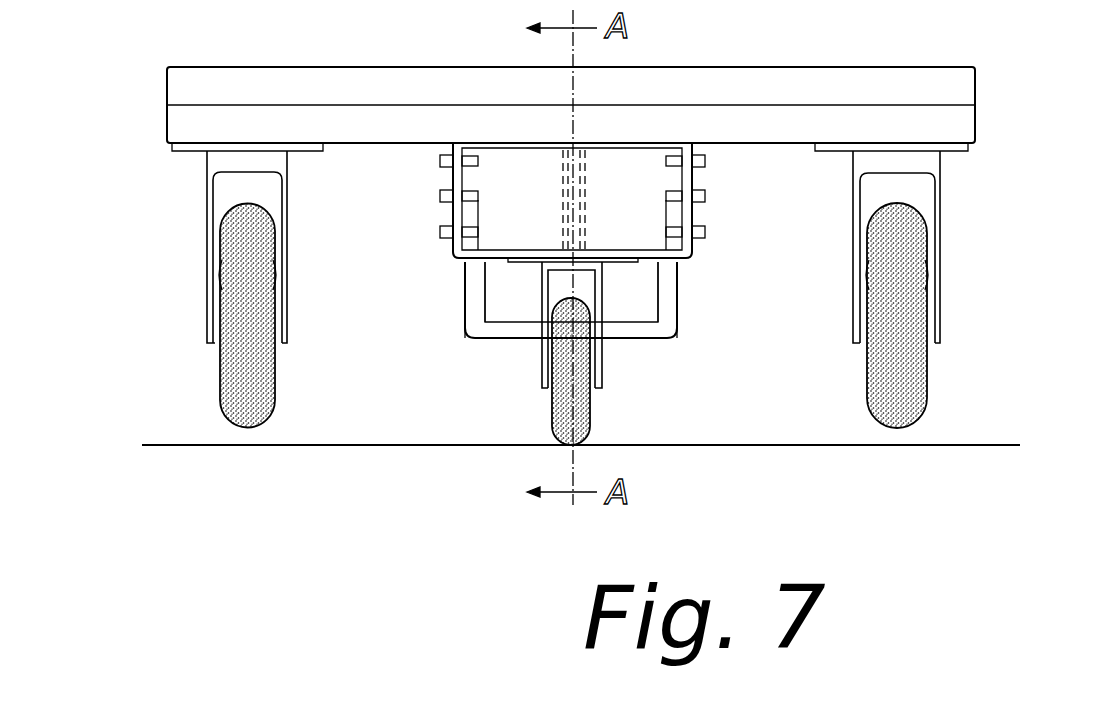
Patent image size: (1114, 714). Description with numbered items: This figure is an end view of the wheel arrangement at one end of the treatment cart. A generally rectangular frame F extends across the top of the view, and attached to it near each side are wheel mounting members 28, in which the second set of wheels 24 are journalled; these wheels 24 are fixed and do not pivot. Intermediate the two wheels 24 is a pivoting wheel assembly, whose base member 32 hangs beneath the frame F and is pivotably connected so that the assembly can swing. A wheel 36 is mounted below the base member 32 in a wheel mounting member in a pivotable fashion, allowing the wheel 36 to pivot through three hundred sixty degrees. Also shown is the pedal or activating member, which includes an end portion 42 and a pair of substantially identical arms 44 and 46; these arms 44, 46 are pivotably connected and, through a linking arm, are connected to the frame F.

The frame F is at (190, 122).
The wheel mounting members 28 is at (207, 195).
The second set of wheels 24 is at (247, 362).
The base member 32 is at (645, 257).
The end portion 42 is at (510, 330).
The arm 44 is at (482, 288).
The arm 46 is at (665, 302).
The wheel 36 is at (590, 415).